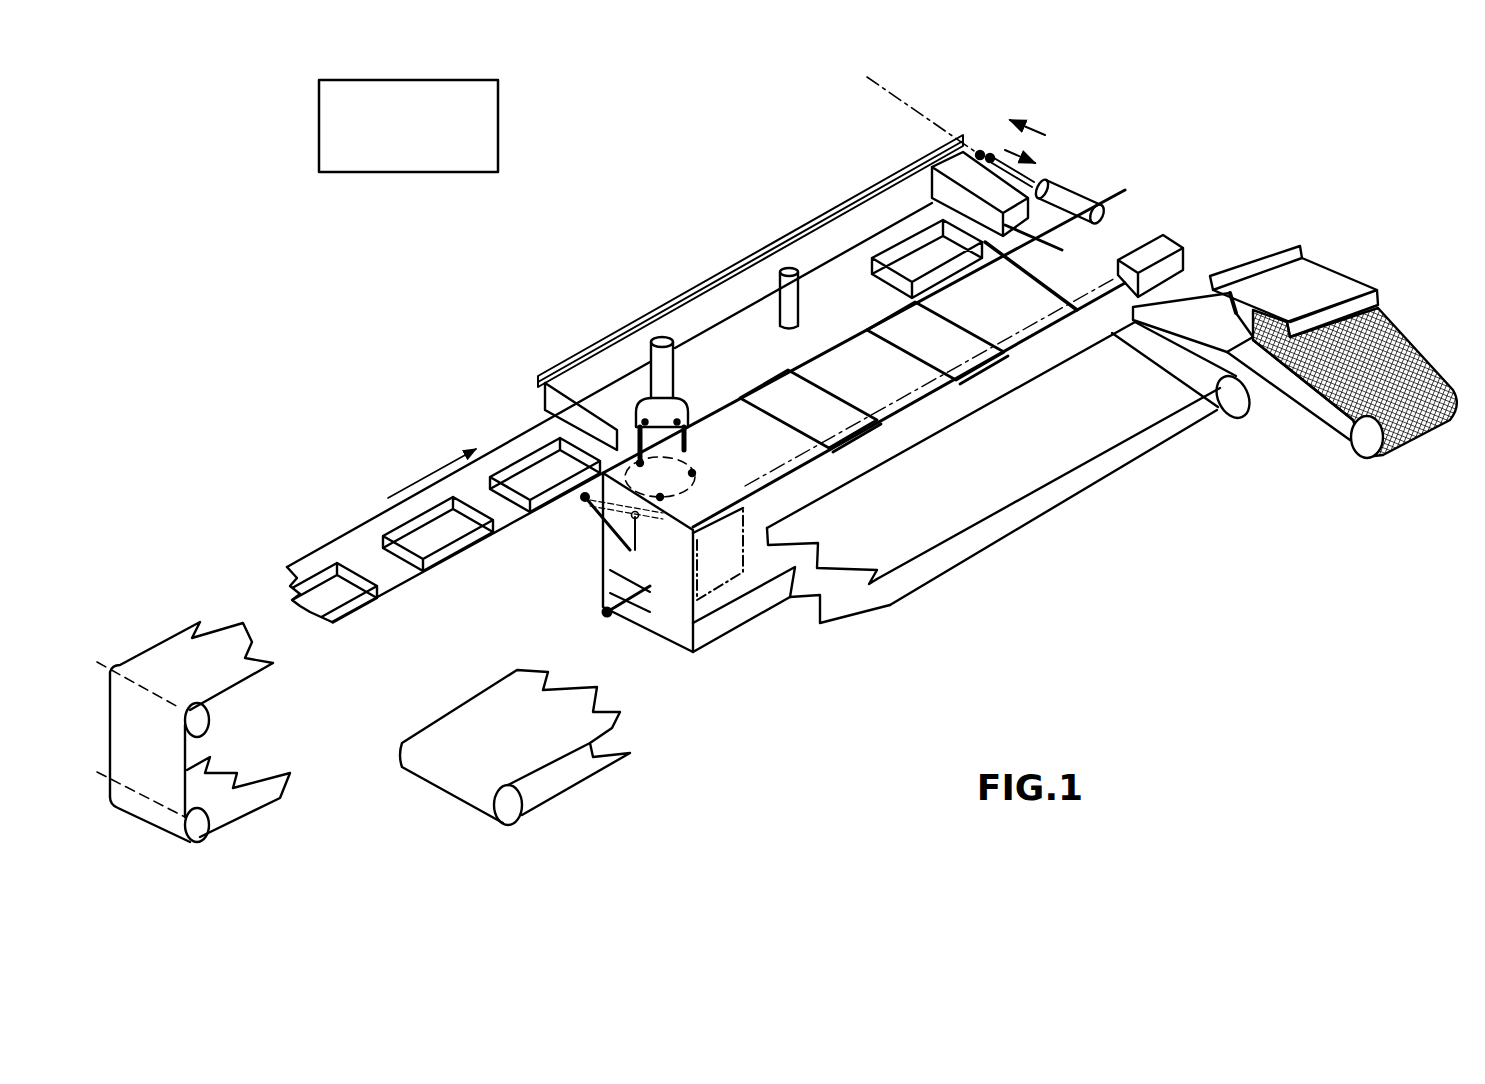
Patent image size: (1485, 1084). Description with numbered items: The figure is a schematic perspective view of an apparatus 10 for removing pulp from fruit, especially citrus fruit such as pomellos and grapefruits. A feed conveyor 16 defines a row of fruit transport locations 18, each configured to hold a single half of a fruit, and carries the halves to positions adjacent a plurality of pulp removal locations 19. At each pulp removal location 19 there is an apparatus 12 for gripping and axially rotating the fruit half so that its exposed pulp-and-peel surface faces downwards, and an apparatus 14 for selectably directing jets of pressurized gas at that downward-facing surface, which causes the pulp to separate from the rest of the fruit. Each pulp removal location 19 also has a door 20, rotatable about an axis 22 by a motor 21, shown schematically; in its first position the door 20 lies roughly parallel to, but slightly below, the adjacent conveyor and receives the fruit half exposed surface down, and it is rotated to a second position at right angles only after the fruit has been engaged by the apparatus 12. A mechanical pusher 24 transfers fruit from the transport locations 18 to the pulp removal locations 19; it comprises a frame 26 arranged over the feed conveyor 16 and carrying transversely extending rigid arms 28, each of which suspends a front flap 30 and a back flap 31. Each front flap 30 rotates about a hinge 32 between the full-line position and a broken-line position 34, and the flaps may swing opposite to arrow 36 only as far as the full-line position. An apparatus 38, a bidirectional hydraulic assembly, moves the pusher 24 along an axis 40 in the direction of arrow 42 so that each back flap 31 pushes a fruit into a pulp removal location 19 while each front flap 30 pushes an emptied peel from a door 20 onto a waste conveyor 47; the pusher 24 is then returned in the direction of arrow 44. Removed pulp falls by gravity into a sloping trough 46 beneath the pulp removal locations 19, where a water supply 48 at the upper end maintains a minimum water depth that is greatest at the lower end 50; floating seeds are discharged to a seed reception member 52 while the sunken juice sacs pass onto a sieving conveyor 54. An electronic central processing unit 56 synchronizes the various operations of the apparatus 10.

The apparatus for removing pulp from fruit 10 is at (352, 302).
The apparatus for gripping and axially rotating a portion of a fruit 12 is at (679, 374).
The apparatus for selectably directing jets of pressurized gas 14 is at (596, 552).
The feed conveyor 16 is at (360, 532).
The fruit transport locations 18 is at (340, 604).
The pulp removal locations 19 is at (795, 444).
The door 20 is at (913, 343).
The motor 21 is at (1166, 249).
The axis 22 is at (1017, 337).
The mechanical pusher 24 is at (748, 245).
The frame 26 is at (563, 364).
The rigid arms 28 is at (957, 172).
The front flap 30 is at (922, 202).
The back flap 31 is at (926, 188).
The hinge 32 is at (616, 424).
The broken line position of flap 34 is at (1070, 185).
The arrow 36 is at (1185, 407).
The apparatus for moving pusher 38 is at (1104, 208).
The axis 40 is at (898, 98).
The arrow 42 is at (1038, 148).
The arrow 44 is at (1028, 127).
The sloping trough 46 is at (745, 613).
The waste conveyor 47 is at (1067, 473).
The water supply 48 is at (657, 600).
The lower end of the trough 50 is at (1188, 296).
The seed reception member 52 is at (1310, 270).
The sieving conveyor 54 is at (1345, 330).
The electronic central processing unit 56 is at (319, 120).